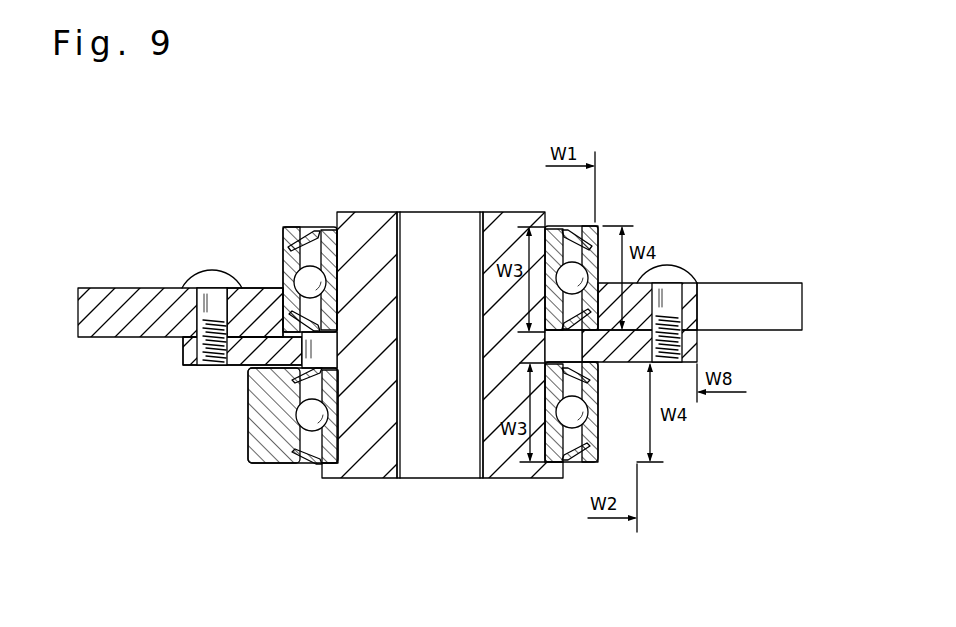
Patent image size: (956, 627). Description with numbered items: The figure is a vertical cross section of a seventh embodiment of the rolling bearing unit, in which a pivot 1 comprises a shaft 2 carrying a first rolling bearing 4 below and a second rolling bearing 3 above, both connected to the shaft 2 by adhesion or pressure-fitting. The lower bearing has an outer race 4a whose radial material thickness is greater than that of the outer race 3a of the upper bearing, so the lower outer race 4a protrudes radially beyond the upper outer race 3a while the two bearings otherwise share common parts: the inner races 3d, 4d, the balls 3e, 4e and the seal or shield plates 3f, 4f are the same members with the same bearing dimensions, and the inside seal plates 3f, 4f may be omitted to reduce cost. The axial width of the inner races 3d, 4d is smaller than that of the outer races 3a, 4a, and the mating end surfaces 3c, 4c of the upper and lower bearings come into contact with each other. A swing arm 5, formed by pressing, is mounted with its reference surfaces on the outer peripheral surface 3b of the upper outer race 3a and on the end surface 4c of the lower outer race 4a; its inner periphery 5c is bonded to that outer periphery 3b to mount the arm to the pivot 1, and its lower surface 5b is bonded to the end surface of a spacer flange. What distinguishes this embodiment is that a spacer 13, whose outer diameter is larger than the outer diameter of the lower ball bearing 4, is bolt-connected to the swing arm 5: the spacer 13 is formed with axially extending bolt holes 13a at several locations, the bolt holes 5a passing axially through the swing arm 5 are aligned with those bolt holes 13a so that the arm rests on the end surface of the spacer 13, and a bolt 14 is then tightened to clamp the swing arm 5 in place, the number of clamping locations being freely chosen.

The pivot 1 is at (381, 209).
The shaft 2 is at (353, 220).
The second rolling bearing 3 is at (410, 253).
The outer race 3a is at (284, 247).
The outer peripheral surface 3b is at (288, 305).
The mating end surface 3c is at (340, 350).
The inner race 3d is at (338, 247).
The balls 3e is at (297, 243).
The seal or shield plate 3f is at (310, 232).
The first rolling bearing 4 is at (391, 439).
The outer race 4a is at (250, 456).
The end surface 4c is at (254, 388).
The inner race 4d is at (338, 433).
The balls 4e is at (304, 422).
The seal or shield plate 4f is at (318, 376).
The swing arm 5 is at (421, 317).
The bolt hole 5a is at (196, 312).
The lower surface 5b is at (254, 366).
The inner periphery 5c is at (284, 310).
The spacer 13 is at (288, 357).
The bolt hole 13a is at (186, 343).
The bolt 14 is at (204, 270).